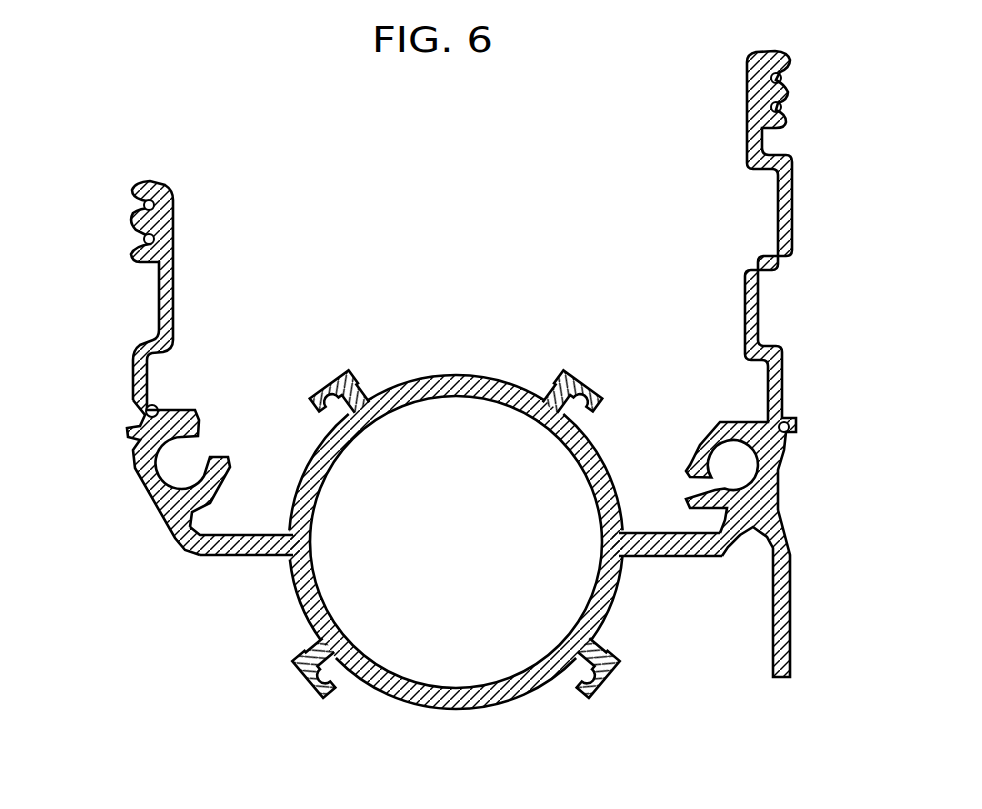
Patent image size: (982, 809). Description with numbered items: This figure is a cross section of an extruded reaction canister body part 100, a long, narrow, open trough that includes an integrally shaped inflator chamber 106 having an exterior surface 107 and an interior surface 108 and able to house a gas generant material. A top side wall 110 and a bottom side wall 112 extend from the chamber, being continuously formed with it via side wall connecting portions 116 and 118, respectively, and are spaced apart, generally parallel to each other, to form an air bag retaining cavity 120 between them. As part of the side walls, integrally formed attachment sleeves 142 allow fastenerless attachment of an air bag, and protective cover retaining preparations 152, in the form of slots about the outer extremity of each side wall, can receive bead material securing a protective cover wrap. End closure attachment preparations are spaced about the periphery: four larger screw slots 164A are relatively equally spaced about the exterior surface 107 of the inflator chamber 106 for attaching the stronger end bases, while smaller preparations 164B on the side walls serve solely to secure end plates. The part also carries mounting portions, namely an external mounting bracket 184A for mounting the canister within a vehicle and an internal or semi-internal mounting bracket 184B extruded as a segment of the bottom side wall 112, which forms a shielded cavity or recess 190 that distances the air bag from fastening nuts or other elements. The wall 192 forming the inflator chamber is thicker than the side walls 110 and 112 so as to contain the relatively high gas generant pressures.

The reaction canister body part 100 is at (818, 319).
The inflator chamber 106 is at (422, 714).
The exterior surface 107 is at (512, 708).
The interior surface 108 is at (430, 397).
The top side wall 110 is at (166, 183).
The bottom side wall 112 is at (748, 67).
The side wall connecting portion 116 is at (240, 547).
The side wall connecting portion 118 is at (665, 548).
The air bag retaining cavity 120 is at (455, 222).
The attachment sleeve 142 is at (197, 442).
The protective cover retaining preparation 152 is at (145, 233).
The end closure attachment preparation 164A is at (348, 390).
The end closure attachment preparation 164B is at (138, 185).
The mounting bracket 184A is at (792, 603).
The mounting bracket 184B is at (793, 203).
The shielded cavity 190 is at (771, 217).
The wall 192 is at (315, 615).